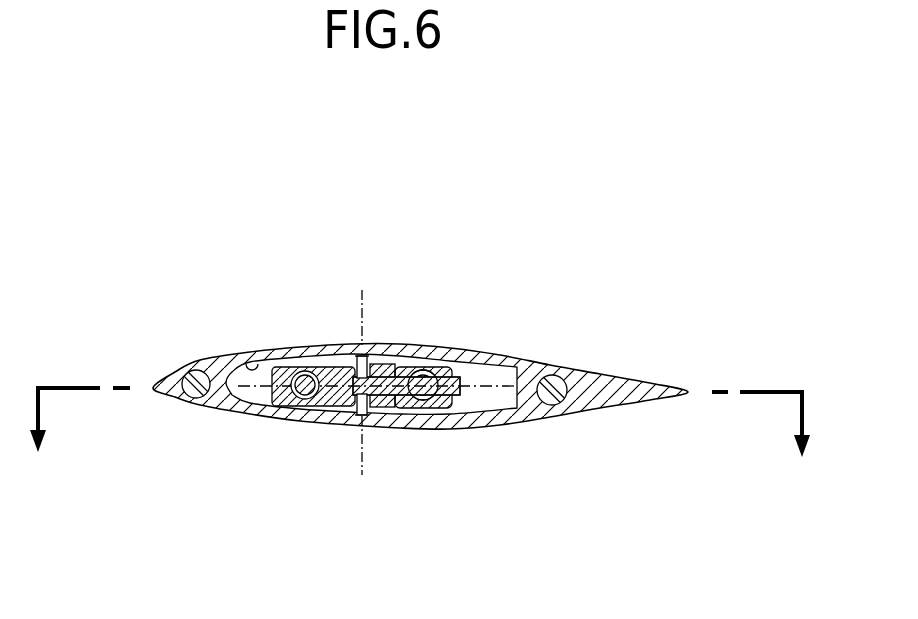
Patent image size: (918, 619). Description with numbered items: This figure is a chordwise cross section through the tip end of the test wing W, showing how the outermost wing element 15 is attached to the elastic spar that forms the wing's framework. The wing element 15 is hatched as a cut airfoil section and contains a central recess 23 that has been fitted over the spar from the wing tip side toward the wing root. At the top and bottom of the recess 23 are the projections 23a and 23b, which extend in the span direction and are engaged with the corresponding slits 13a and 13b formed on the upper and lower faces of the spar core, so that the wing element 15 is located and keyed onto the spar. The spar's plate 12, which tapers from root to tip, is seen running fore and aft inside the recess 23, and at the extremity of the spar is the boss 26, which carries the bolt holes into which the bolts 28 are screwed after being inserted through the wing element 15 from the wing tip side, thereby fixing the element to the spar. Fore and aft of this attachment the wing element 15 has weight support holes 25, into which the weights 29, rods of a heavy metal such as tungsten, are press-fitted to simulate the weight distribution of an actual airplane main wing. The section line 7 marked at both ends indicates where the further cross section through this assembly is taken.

The test wing W is at (488, 294).
The wing element 15 is at (512, 327).
The section line 7- 7 is at (420, 390).
The plate 12 is at (447, 408).
The upper slit 13a is at (362, 349).
The lower slit 13b is at (357, 425).
The recess 23 is at (260, 360).
The upper projection 23a is at (384, 356).
The lower projection 23b is at (383, 408).
The weight support hole 25 is at (187, 398).
The boss 26 is at (264, 398).
The bolt 28 is at (430, 362).
The weight 29 is at (193, 370).